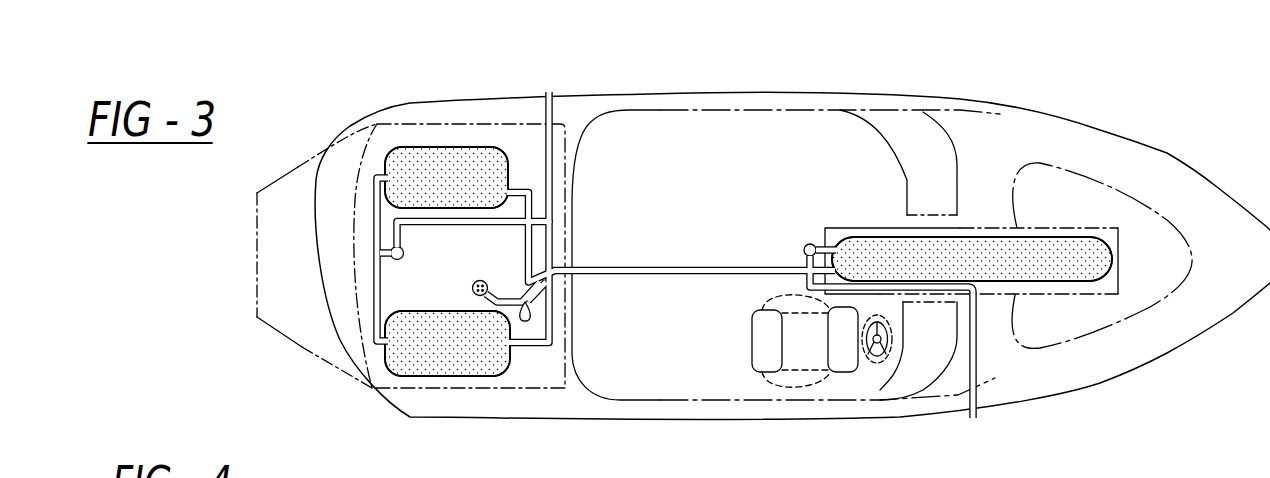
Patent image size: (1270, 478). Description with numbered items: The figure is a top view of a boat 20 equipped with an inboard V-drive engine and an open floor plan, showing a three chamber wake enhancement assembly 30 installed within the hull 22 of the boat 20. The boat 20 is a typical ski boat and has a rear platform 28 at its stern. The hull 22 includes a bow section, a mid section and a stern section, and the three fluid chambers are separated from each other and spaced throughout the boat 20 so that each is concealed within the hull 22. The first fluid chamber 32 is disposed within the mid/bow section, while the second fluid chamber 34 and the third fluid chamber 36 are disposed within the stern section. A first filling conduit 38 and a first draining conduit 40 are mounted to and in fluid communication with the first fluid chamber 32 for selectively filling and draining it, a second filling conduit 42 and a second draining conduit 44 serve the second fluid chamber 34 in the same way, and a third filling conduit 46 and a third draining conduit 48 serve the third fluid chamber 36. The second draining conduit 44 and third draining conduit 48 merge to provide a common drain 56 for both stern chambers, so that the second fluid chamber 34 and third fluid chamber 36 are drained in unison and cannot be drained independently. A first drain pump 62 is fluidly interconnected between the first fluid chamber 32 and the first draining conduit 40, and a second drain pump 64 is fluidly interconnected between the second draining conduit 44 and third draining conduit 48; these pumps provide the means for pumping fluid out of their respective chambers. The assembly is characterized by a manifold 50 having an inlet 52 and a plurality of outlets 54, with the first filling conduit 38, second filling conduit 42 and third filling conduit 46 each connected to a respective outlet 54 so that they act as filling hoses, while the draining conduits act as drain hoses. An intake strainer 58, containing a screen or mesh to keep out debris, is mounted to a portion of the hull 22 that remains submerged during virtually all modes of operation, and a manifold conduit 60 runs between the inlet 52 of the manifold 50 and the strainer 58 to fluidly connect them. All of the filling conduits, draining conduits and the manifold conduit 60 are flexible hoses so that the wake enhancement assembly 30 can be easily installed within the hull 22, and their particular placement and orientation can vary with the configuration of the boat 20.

The boat 20 is at (1140, 128).
The hull 22 is at (954, 108).
The rear platform 28 is at (262, 264).
The wake enhancement assembly 30 is at (592, 238).
The first fluid chamber 32 is at (1044, 250).
The second fluid chamber 34 is at (425, 363).
The third fluid chamber 36 is at (425, 157).
The first filling conduit 38 is at (742, 266).
The first draining conduit 40 is at (977, 365).
The second filling conduit 42 is at (541, 347).
The second draining conduit 44 is at (373, 306).
The third filling conduit 46 is at (536, 235).
The third draining conduit 48 is at (373, 210).
The manifold 50 is at (509, 297).
The inlet 52 is at (494, 297).
The outlets 54 is at (534, 321).
The common drain 56 is at (554, 110).
The intake strainer 58 is at (476, 283).
The manifold conduit 60 is at (475, 308).
The first drain pump 62 is at (811, 243).
The second drain pump 64 is at (390, 246).